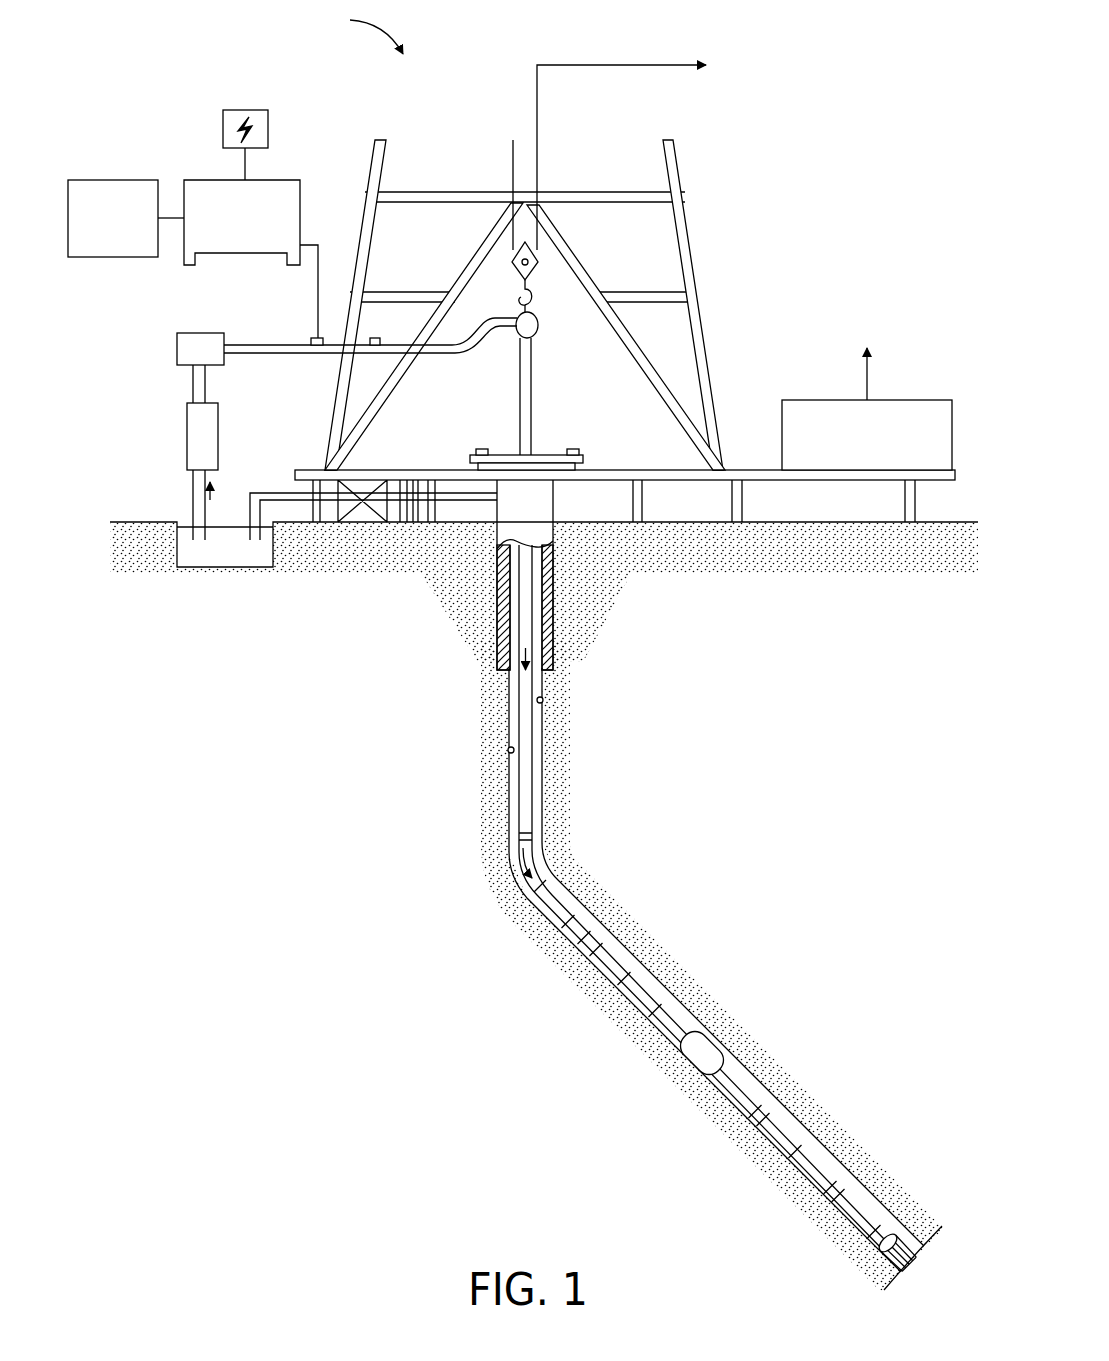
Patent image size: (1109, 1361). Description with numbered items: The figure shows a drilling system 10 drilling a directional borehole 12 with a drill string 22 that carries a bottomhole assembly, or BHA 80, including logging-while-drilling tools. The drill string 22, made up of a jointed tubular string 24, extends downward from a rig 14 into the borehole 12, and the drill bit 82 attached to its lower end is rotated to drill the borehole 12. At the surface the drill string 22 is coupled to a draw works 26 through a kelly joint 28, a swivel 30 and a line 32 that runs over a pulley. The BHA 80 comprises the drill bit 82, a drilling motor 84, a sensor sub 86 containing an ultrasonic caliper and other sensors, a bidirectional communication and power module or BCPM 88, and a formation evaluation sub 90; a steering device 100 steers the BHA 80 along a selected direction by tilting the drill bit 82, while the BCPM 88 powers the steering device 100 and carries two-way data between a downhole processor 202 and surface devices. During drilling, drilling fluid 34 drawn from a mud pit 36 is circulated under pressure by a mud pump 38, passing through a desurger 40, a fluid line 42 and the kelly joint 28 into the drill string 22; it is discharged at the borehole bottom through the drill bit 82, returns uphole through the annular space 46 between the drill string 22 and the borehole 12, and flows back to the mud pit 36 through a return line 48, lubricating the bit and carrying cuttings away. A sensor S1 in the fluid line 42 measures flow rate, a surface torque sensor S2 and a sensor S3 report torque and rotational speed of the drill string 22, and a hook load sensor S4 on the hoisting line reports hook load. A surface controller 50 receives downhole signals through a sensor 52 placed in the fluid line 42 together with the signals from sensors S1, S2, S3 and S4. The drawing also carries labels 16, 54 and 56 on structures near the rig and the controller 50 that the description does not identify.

The drilling system 10 is at (364, 33).
The borehole 12 is at (508, 778).
The rig 14 is at (703, 308).
The rig floor 16 is at (739, 468).
The drill string 22 is at (525, 853).
The jointed tubular string 24 is at (543, 699).
The draw works 26 is at (920, 400).
The kelly joint 28 is at (536, 362).
The swivel 30 is at (518, 333).
The line 32 is at (538, 177).
The drilling fluid 34 is at (190, 550).
The mud pit 36 is at (218, 566).
The mud pump 38 is at (186, 436).
The desurger 40 is at (177, 340).
The fluid line 42 is at (322, 353).
The annular space 46 is at (518, 812).
The return line 48 is at (412, 500).
The surface controller 50 is at (210, 178).
The sensor 52 is at (317, 337).
The power supply 54 is at (248, 109).
The alarm 56 is at (138, 258).
The BHA 80 is at (724, 973).
The drill bit 82 is at (917, 1230).
The drilling motor 84 is at (807, 1158).
The sensor sub 86 is at (758, 1120).
The bidirectional communication and power module 88 is at (768, 1102).
The formation evaluation sub 90 is at (712, 1085).
The steering device 100 is at (845, 1183).
The processor 202 is at (804, 1147).
The sensor S1 is at (378, 338).
The surface torque sensor S2 is at (574, 450).
The sensor S3 is at (483, 449).
The hook load sensor S4 is at (540, 264).